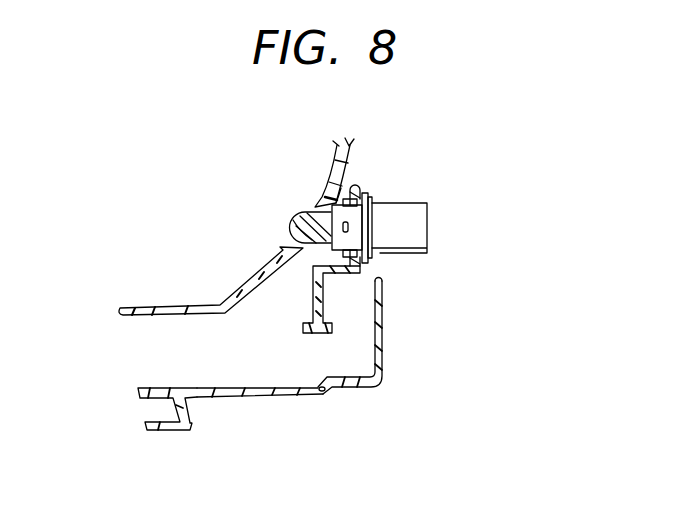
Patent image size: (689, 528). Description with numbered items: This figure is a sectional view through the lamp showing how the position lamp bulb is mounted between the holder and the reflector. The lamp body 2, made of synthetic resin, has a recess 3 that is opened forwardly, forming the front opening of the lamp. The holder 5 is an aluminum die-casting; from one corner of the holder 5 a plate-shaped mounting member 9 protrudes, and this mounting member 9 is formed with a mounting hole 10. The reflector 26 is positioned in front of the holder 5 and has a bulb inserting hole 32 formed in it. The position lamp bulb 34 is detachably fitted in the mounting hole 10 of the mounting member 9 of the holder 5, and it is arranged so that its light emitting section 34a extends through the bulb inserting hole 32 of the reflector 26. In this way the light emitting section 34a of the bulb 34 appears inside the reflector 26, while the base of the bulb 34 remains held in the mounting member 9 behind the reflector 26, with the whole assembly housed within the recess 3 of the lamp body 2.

The lamp body 2 is at (283, 392).
The recess 3 is at (224, 395).
The holder 5 is at (323, 320).
The mounting member 9 is at (323, 303).
The mounting hole 10 is at (363, 213).
The reflector 26 is at (138, 307).
The bulb inserting hole 32 is at (302, 213).
The position lamp bulb 34 is at (420, 230).
The light emitting section 34a is at (298, 215).